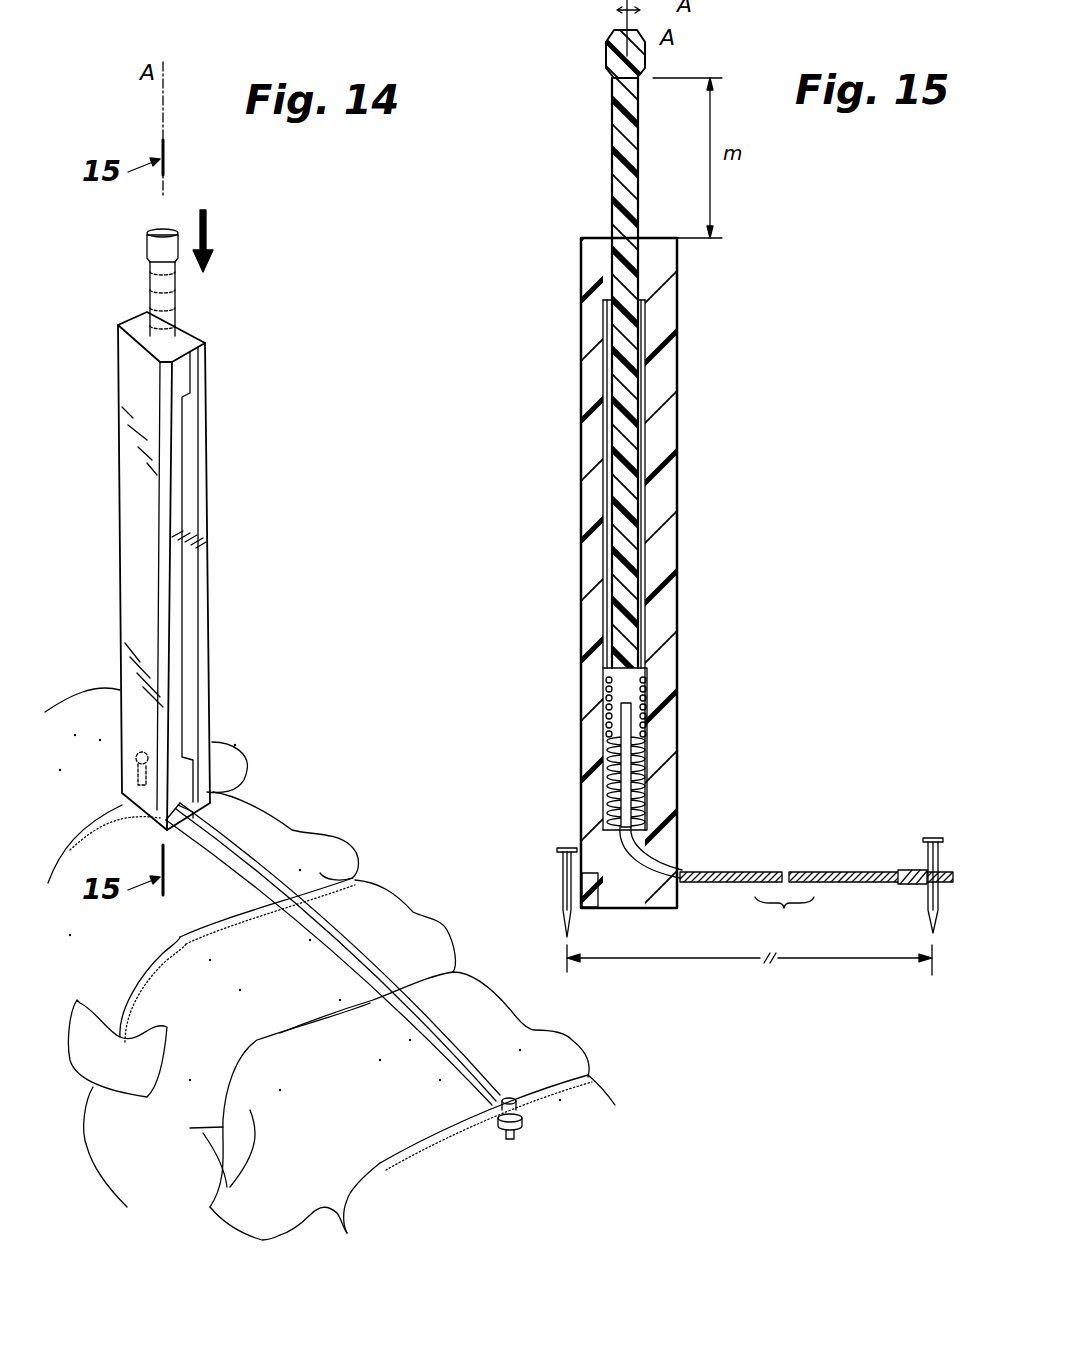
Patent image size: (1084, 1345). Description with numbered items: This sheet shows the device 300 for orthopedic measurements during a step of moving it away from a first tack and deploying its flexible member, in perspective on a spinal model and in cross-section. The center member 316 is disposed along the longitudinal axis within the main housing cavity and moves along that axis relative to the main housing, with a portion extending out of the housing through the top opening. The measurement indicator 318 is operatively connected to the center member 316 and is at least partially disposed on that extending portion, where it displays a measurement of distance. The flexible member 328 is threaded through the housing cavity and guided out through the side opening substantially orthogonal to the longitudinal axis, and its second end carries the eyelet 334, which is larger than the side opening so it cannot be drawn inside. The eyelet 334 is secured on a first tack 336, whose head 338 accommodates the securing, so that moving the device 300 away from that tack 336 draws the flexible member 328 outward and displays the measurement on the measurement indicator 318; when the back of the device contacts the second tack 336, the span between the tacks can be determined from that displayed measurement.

In FIG. 14, the device 300 is at (233, 457).
In FIG. 15, the device 300 is at (791, 302).
In FIG. 14, the center member 316 is at (150, 240).
In FIG. 15, the center member 316 is at (612, 118).
In FIG. 14, the measurement indicator 318 is at (150, 296).
In FIG. 15, the measurement indicator 318 is at (612, 198).
In FIG. 14, the flexible member 328 is at (403, 1010).
In FIG. 15, the flexible member 328 is at (757, 872).
In FIG. 14, the eyelet 334 is at (522, 1120).
In FIG. 15, the eyelet 334 is at (910, 872).
In FIG. 14, the tack 336 is at (140, 778).
In FIG. 15, the tack 336 is at (562, 912).
In FIG. 14, the head 338 is at (506, 1096).
In FIG. 15, the head 338 is at (566, 848).